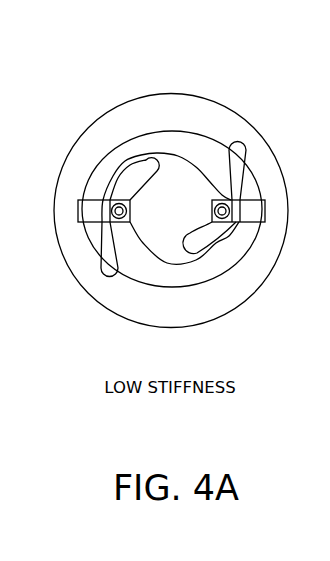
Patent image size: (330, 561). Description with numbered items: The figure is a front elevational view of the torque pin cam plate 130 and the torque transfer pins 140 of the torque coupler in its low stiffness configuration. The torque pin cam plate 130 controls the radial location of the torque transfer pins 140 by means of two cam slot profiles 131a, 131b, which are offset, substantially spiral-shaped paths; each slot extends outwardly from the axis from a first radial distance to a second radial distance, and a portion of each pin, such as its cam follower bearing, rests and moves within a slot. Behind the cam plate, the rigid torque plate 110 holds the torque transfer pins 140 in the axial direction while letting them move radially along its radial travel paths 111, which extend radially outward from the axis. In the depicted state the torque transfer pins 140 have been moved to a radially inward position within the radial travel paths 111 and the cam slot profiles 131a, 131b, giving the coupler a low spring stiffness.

The rigid torque plate 110 is at (102, 266).
The radial travel paths 111 is at (83, 213).
The torque pin cam plate 130 is at (174, 108).
The cam slot profile 131a is at (109, 163).
The cam slot profile 131b is at (239, 150).
The torque transfer pins 140 is at (227, 204).